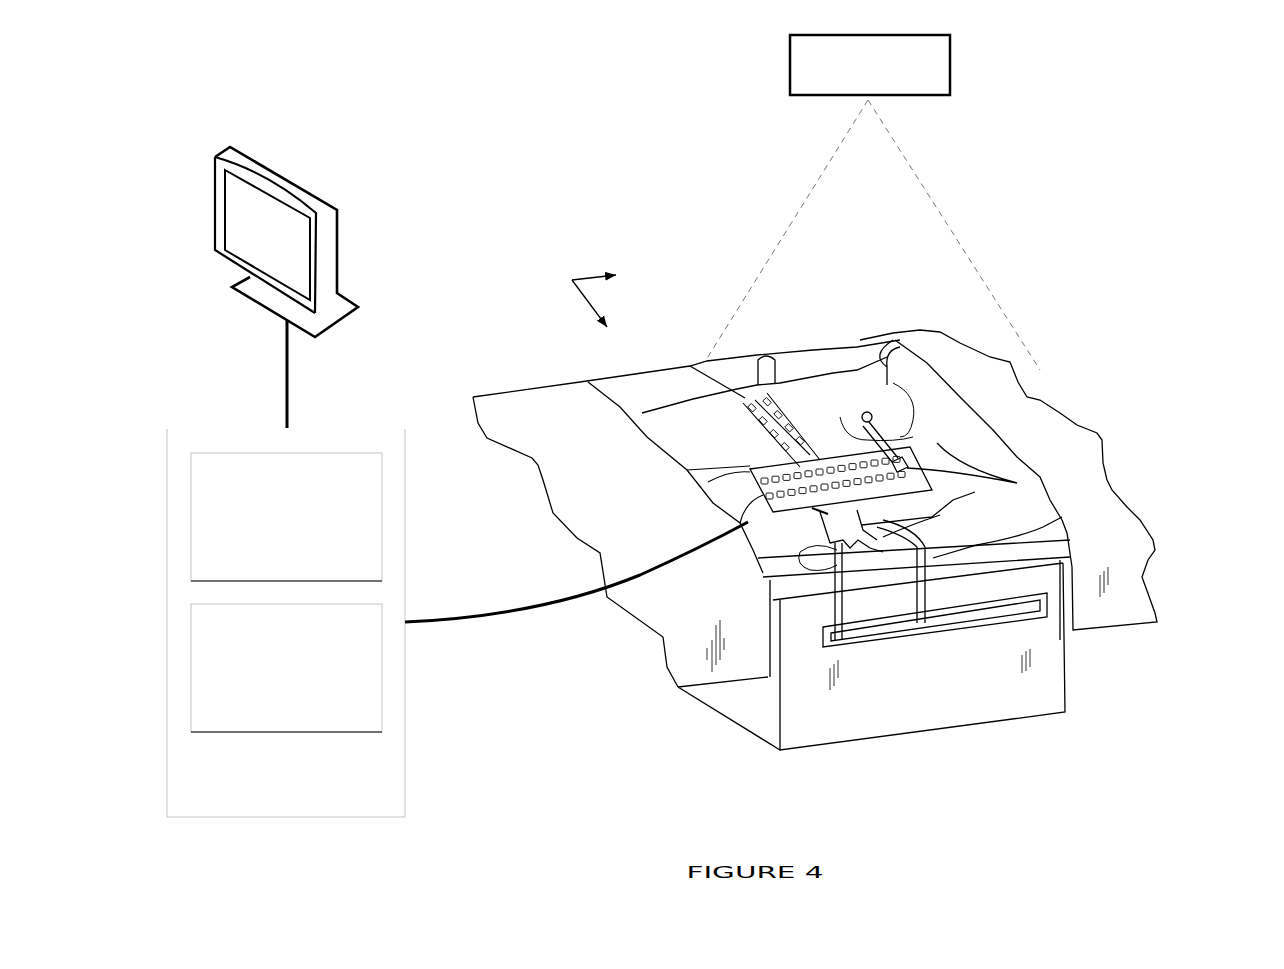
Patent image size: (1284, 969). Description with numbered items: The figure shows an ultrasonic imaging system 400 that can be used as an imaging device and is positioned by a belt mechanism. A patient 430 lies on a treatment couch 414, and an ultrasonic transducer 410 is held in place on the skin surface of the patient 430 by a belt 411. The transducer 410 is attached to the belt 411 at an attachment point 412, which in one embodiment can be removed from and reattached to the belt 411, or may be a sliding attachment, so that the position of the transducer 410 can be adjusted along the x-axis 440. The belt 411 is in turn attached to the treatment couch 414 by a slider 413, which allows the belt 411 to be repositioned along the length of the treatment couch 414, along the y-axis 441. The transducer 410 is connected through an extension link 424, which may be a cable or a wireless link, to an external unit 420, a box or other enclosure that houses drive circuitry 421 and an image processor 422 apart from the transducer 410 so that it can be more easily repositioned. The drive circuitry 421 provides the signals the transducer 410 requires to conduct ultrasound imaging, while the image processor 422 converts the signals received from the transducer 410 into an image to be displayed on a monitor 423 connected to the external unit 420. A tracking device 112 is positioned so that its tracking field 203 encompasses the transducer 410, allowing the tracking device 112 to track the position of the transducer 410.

The tracking device 112 is at (855, 89).
The tracking field 203 is at (834, 152).
The ultrasonic imaging system 400 is at (1106, 296).
The ultrasonic transducer 410 is at (860, 410).
The belt 411 is at (745, 395).
The attachment point 412 is at (819, 517).
The slider 413 is at (885, 653).
The treatment couch 414 is at (1069, 657).
The external unit 420 is at (272, 806).
The drive circuitry 421 is at (272, 691).
The image processor 422 is at (272, 538).
The monitor 423 is at (338, 182).
The extension link 424 is at (455, 645).
The patient 430 is at (990, 436).
The x-axis 440 is at (617, 321).
The y-axis 441 is at (622, 276).